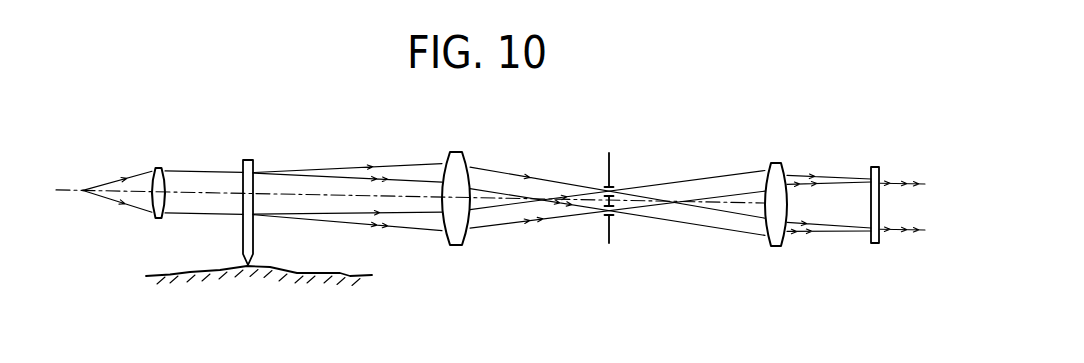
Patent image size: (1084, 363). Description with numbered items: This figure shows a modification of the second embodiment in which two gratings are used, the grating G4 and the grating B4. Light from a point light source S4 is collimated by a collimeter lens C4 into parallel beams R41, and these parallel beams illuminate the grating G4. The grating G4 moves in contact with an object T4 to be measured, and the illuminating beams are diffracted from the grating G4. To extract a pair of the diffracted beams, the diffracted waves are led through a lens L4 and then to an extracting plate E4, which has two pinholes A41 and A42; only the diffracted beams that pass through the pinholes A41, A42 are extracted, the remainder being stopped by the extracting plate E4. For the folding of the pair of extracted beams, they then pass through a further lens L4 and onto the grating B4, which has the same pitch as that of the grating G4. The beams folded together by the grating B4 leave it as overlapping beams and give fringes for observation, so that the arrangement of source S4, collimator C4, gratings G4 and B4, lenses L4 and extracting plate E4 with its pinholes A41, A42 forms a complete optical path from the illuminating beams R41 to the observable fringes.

The point light source S4 is at (83, 188).
The collimeter lens C4 is at (158, 168).
The parallel beams R41 is at (504, 189).
The grating G4 is at (247, 160).
The object T4 is at (322, 276).
The lens L4 is at (456, 152).
The extracting plate E4 is at (609, 153).
The pinhole A41 is at (614, 190).
The pinhole A42 is at (614, 213).
The grating B4 is at (877, 167).